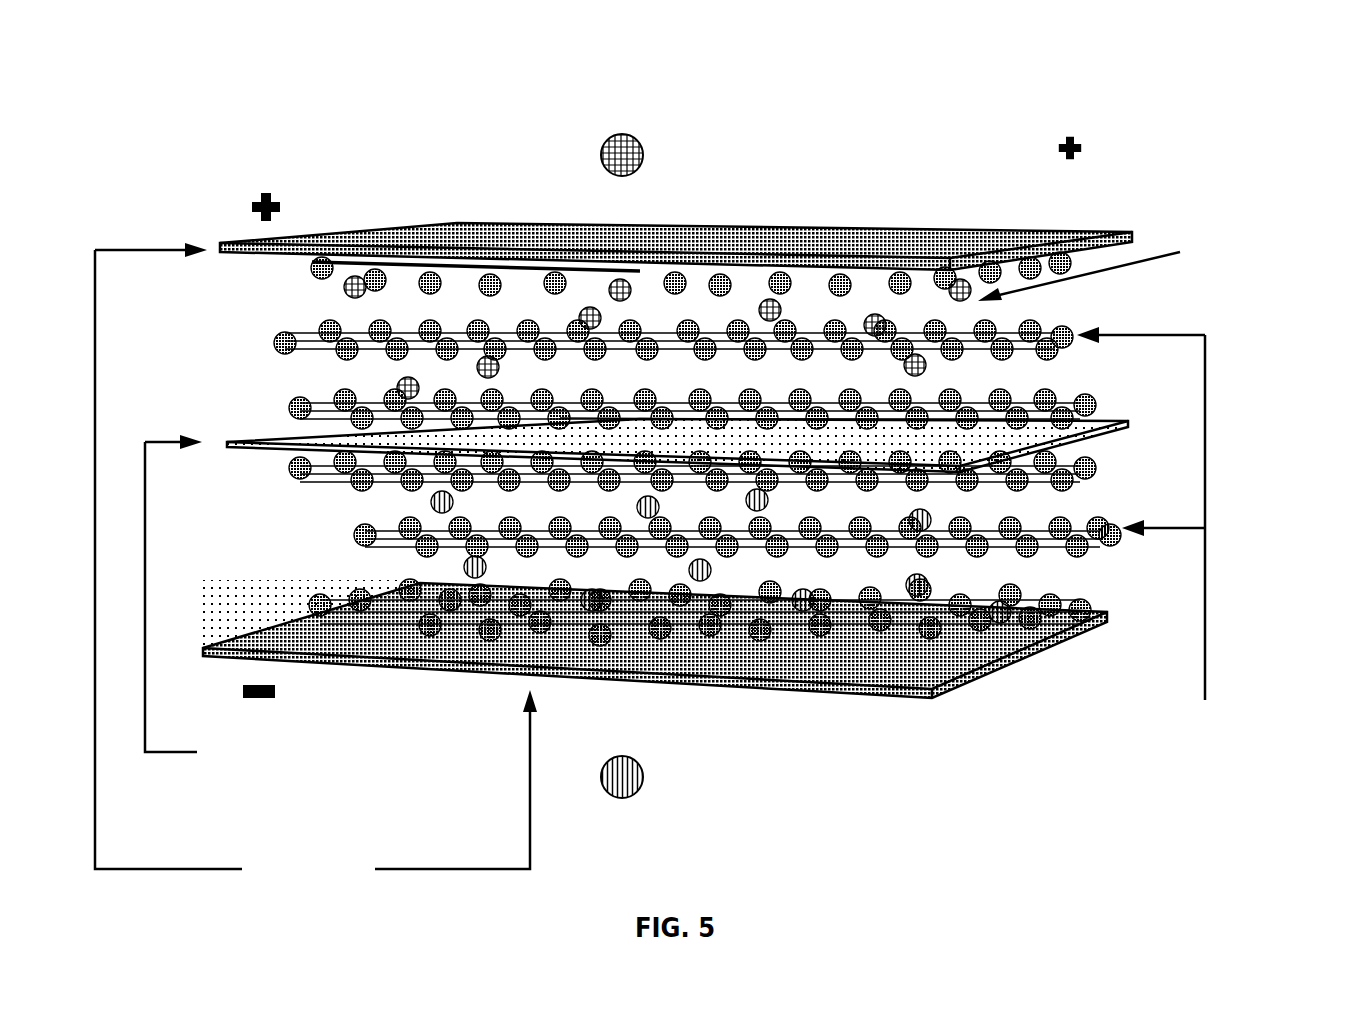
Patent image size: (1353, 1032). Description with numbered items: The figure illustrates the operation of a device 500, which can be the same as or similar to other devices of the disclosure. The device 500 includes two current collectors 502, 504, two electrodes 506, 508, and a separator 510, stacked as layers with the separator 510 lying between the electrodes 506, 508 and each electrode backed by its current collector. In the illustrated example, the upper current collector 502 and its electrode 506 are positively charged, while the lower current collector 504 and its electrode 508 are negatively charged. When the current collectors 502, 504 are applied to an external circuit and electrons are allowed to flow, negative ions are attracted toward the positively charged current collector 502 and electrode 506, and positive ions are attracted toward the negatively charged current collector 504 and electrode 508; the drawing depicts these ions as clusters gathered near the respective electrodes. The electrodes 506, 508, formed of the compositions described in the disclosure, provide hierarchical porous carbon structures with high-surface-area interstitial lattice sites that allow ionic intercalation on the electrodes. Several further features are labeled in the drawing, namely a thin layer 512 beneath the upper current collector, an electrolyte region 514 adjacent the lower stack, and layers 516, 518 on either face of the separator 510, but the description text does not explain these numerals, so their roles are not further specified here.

The device 500 is at (1153, 82).
The current collector 502 is at (452, 228).
The current collector 504 is at (957, 658).
The electrode 506 is at (1062, 332).
The electrode 508 is at (1065, 553).
The separator 510 is at (1090, 437).
The electrolyte layer 512 is at (322, 262).
The solid state electrolyte 514 is at (320, 608).
The electrolyte layer 516 is at (1064, 400).
The electrolyte layer 518 is at (1070, 466).